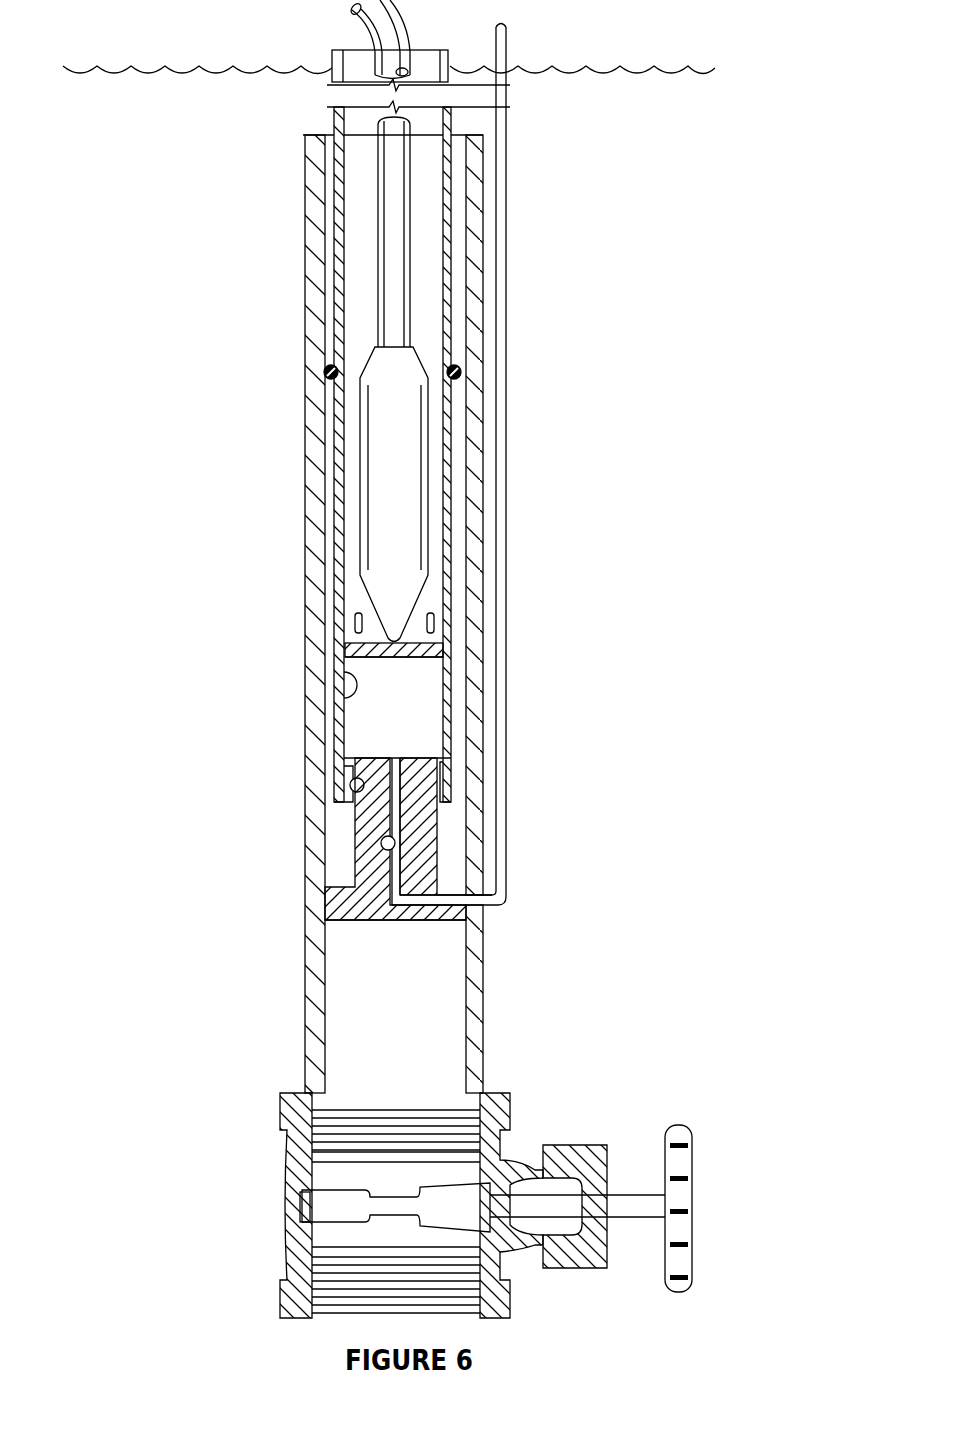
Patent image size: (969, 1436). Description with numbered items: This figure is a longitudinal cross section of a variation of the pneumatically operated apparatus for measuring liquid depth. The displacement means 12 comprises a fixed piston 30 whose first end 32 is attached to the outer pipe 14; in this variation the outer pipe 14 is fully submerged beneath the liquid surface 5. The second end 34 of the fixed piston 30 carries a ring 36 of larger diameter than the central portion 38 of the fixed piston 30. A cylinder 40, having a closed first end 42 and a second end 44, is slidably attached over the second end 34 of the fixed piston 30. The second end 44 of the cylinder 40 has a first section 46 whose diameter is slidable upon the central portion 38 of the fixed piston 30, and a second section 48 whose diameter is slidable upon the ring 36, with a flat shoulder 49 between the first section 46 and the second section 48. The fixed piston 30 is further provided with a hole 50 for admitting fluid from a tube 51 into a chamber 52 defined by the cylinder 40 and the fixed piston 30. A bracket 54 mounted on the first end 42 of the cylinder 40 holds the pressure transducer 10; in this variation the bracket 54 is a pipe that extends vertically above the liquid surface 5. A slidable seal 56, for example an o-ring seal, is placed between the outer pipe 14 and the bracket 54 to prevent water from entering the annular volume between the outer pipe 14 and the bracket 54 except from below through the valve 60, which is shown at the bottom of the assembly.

The liquid surface 5 is at (250, 72).
The pressure transducer 10 is at (376, 362).
The displacement means 12 is at (332, 728).
The outer pipe 14 is at (306, 410).
The fixed piston 30 is at (452, 868).
The first end of fixed piston 32 is at (362, 920).
The second end of fixed piston 34 is at (402, 750).
The ring 36 is at (443, 763).
The central portion of fixed piston 38 is at (438, 838).
The cylinder 40 is at (448, 700).
The first end of cylinder 42 is at (335, 650).
The second end of cylinder 44 is at (323, 815).
The first section 46 is at (350, 775).
The second section 48 is at (347, 673).
The flat shoulder 49 is at (350, 760).
The hole 50 is at (395, 838).
The tube 51 is at (508, 320).
The chamber 52 is at (418, 683).
The bracket 54 is at (455, 543).
The slidable seal 56 is at (460, 370).
The valve 60 is at (572, 1095).